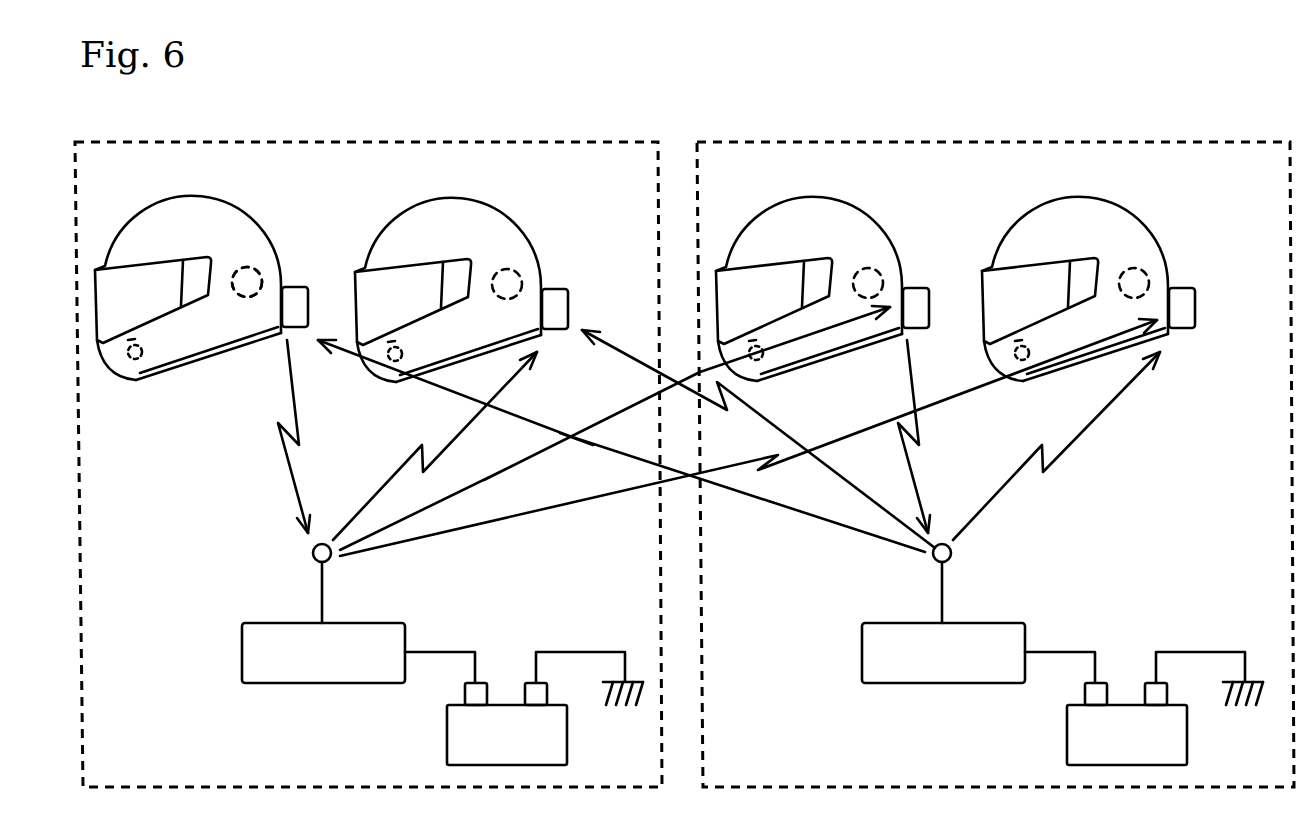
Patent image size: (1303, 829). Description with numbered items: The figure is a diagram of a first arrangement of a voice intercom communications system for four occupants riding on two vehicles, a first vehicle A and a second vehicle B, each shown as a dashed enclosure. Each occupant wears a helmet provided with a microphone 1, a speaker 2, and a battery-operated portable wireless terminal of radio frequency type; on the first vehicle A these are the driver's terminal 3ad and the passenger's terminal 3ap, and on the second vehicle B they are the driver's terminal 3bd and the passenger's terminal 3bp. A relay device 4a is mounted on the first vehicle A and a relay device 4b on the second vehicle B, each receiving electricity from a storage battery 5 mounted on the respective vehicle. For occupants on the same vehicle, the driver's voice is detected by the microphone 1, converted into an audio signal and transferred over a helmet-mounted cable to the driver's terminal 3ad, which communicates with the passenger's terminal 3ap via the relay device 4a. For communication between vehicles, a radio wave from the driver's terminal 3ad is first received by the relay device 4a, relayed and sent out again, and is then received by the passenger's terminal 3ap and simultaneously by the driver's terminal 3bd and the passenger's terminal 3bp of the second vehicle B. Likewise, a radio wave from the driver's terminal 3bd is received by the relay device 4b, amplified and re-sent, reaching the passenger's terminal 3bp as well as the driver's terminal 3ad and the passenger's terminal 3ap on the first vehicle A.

The microphone 1 is at (133, 380).
The speaker 2 is at (250, 265).
The driver's terminal 3ad is at (292, 283).
The passenger's terminal 3ap is at (552, 285).
The driver's terminal 3bd is at (913, 284).
The passenger's terminal 3bp is at (1180, 284).
The relay device 4a is at (242, 647).
The relay device 4b is at (862, 647).
The storage battery 5 is at (447, 725).
The first vehicle A is at (323, 789).
The second vehicle B is at (945, 789).